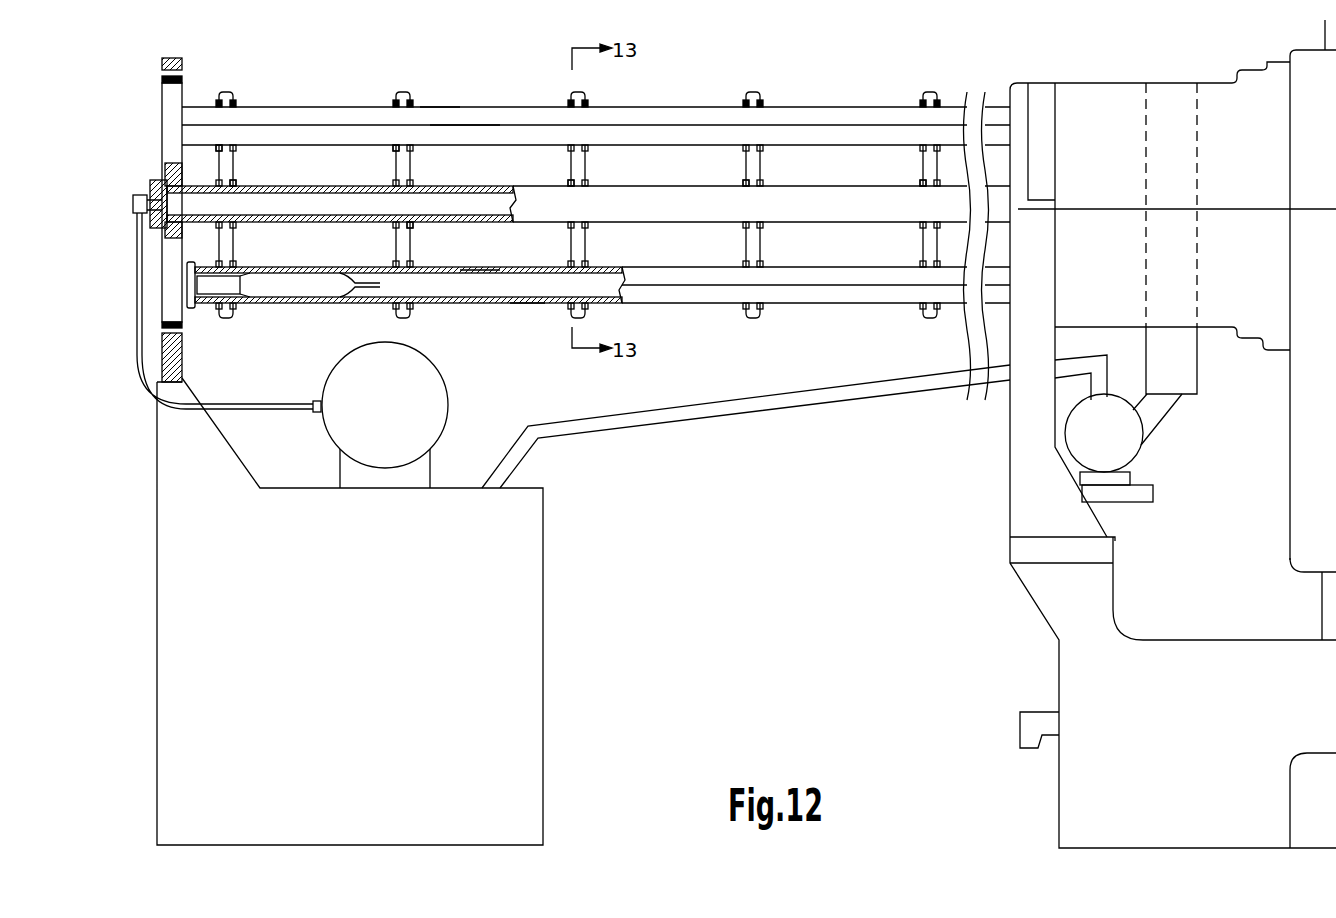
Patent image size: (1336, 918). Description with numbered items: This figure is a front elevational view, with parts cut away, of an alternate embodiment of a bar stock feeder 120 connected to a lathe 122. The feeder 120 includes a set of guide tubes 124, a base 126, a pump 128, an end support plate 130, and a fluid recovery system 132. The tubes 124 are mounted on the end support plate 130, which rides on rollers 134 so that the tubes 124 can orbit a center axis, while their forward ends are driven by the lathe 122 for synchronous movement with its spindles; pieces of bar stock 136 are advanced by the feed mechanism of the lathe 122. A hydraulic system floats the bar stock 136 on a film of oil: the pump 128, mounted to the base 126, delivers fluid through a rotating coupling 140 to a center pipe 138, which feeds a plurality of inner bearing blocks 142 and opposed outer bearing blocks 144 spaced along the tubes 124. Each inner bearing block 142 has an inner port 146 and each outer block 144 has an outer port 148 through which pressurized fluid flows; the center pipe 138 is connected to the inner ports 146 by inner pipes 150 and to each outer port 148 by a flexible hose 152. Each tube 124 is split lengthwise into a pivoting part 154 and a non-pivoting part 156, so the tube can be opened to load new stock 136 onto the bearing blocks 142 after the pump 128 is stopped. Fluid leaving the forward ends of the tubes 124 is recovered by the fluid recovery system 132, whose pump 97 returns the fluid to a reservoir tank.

The pump 97 is at (1082, 437).
The bar stock feeder 120 is at (790, 80).
The lathe 122 is at (1113, 68).
The guide tubes 124 is at (827, 105).
The base 126 is at (492, 687).
The pump 128 is at (425, 420).
The end support plate 130 is at (178, 107).
The fluid recovery system 132 is at (836, 396).
The rollers 134 is at (175, 58).
The bar stock 136 is at (505, 283).
The center pipe 138 is at (478, 185).
The rotating coupling 140 is at (137, 195).
The inner bearing blocks 142 is at (258, 267).
The outer bearing blocks 144 is at (255, 303).
The inner port 146 is at (343, 270).
The outer port 148 is at (343, 293).
The inner pipes 150 is at (395, 240).
The flexible hose 152 is at (398, 92).
The pivoting part 154 is at (432, 117).
The non-pivoting part 156 is at (465, 132).